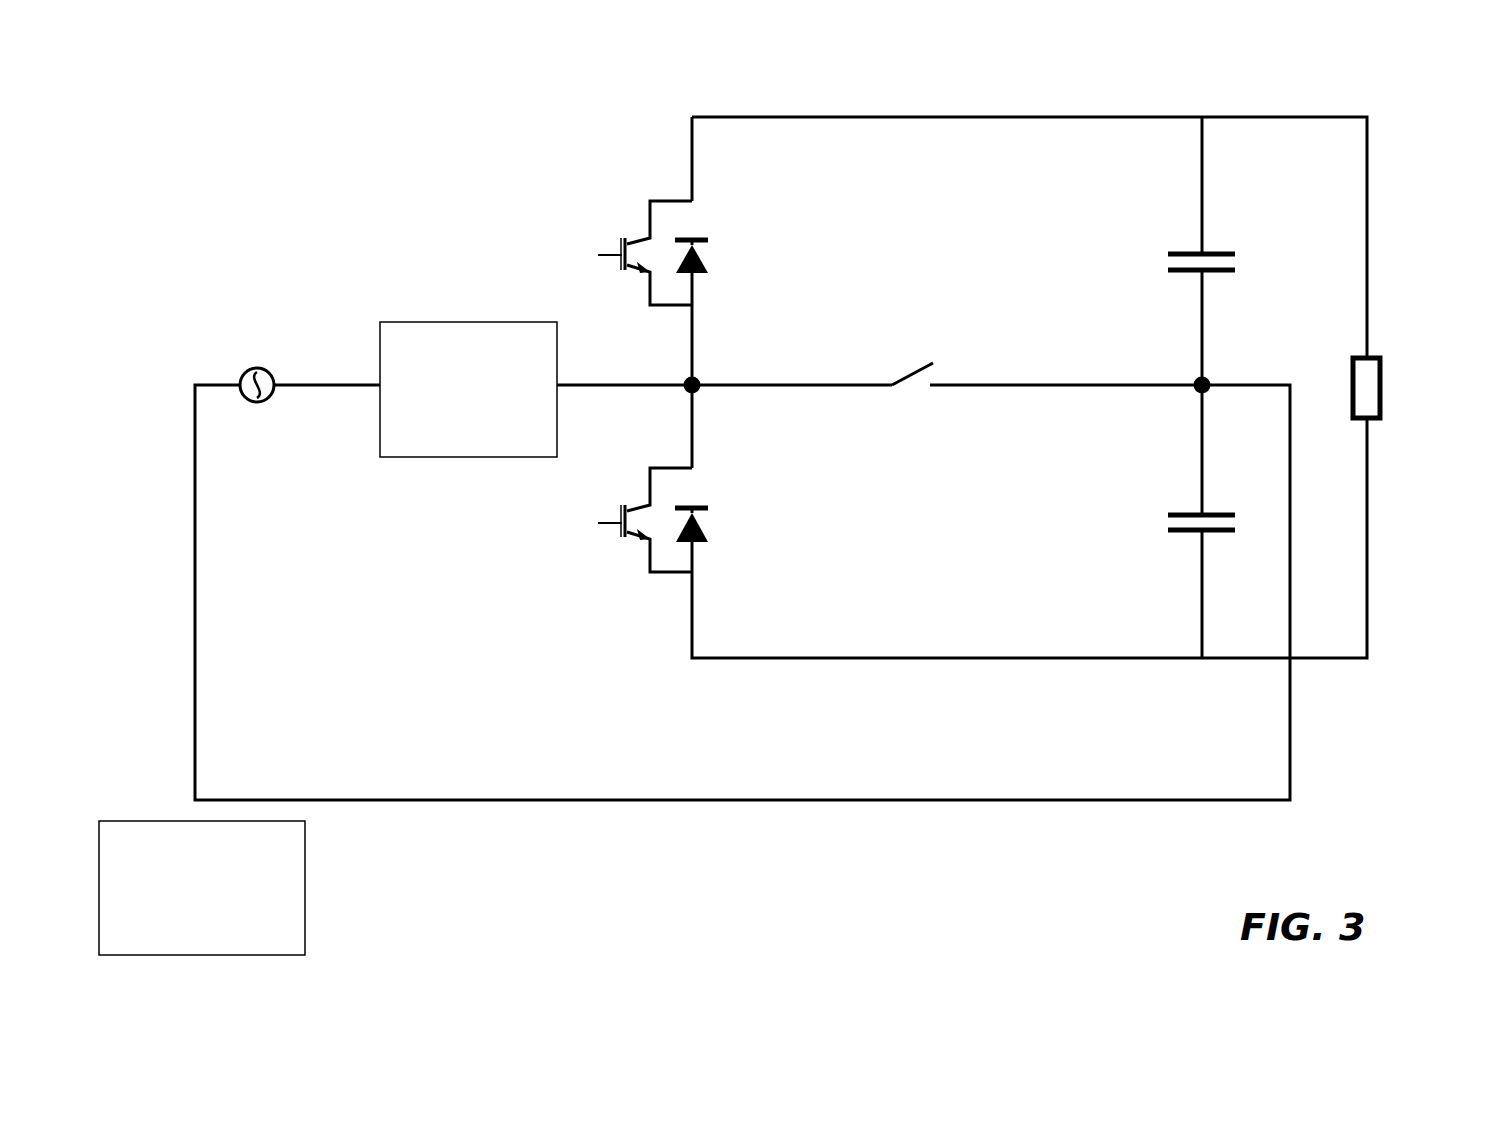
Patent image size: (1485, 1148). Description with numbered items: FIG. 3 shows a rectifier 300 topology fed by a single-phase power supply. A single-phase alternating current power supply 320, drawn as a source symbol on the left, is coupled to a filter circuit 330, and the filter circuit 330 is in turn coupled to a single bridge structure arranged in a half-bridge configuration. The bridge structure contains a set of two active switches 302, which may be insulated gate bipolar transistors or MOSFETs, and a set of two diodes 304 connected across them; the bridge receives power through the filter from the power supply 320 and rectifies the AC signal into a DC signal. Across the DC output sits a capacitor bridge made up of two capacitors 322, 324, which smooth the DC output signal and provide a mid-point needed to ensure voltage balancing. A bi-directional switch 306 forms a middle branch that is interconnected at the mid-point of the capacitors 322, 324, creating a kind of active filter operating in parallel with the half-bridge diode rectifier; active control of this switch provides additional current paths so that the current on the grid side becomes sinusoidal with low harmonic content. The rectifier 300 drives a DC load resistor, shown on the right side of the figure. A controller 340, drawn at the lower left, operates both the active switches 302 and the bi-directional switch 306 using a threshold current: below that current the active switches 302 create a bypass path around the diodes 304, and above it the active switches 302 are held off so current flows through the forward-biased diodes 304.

The rectifier 300 is at (362, 96).
The active switches 302 is at (650, 205).
The diodes 304 is at (706, 262).
The bi-directional switch 306 is at (912, 388).
The single-phase AC power supply 320 is at (260, 367).
The capacitor 322 is at (1170, 250).
The capacitor 324 is at (1177, 512).
The filter circuit 330 is at (468, 389).
The controller 340 is at (202, 888).